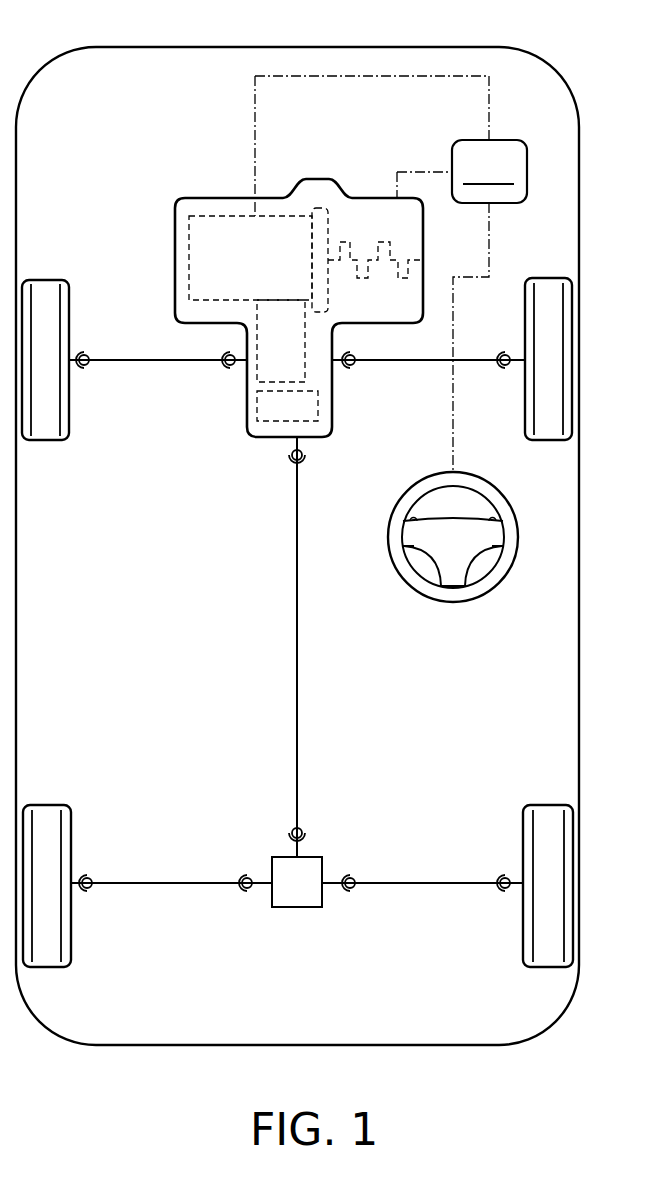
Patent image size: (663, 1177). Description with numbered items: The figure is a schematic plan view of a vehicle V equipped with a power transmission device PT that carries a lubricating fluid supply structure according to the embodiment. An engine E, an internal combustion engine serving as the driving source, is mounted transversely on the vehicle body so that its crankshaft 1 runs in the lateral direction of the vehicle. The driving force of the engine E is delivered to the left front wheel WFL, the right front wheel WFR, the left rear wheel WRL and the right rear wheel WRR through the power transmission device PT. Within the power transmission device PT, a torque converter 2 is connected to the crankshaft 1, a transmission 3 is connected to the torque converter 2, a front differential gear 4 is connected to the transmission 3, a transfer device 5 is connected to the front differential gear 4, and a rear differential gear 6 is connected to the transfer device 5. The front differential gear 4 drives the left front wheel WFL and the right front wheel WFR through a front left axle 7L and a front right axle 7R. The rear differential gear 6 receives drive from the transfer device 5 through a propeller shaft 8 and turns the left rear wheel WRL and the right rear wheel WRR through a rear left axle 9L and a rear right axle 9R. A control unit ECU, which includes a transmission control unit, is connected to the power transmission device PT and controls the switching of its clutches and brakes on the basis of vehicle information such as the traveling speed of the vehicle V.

The vehicle V is at (553, 60).
The power transmission device PT is at (232, 165).
The control unit ECU is at (462, 306).
The engine E is at (372, 196).
The crankshaft 1 is at (362, 278).
The torque converter 2 is at (326, 207).
The transmission 3 is at (202, 215).
The front differential gear 4 is at (305, 372).
The transfer device 5 is at (318, 402).
The rear differential gear 6 is at (295, 893).
The front left axle 7L is at (185, 360).
The front right axle 7R is at (443, 360).
The propeller shaft 8 is at (297, 617).
The rear left axle 9L is at (185, 883).
The rear right axle 9R is at (422, 883).
The left front wheel WFL is at (47, 302).
The right front wheel WFR is at (547, 291).
The left rear wheel WRL is at (47, 824).
The right rear wheel WRR is at (548, 822).